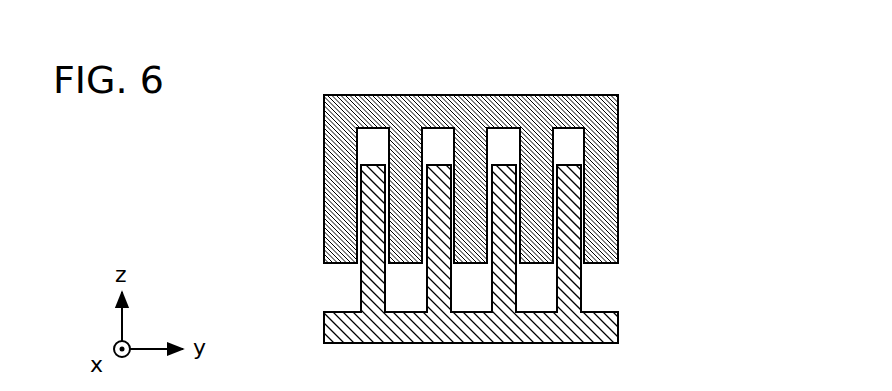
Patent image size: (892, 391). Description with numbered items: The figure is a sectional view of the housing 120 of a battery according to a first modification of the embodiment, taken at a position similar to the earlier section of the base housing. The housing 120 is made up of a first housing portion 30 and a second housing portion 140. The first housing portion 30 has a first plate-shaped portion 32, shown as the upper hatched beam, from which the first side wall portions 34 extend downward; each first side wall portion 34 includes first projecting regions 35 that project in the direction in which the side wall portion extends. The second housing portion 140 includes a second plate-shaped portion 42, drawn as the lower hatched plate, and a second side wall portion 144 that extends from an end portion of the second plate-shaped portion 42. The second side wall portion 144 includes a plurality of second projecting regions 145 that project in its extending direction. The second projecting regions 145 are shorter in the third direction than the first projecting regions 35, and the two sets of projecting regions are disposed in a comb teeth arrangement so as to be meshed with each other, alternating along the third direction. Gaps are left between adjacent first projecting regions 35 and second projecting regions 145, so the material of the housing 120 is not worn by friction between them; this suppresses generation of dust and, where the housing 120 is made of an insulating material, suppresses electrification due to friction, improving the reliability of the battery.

The housing 120 is at (514, 171).
The first housing portion 30 is at (513, 168).
The first plate-shaped portion 32 is at (603, 101).
The first side wall portion 34 is at (632, 137).
The first projecting region 35 is at (540, 185).
The second housing portion 140 is at (524, 254).
The second side wall portion 144 is at (617, 282).
The second projecting region 145 is at (435, 293).
The second plate-shaped portion 42 is at (603, 325).